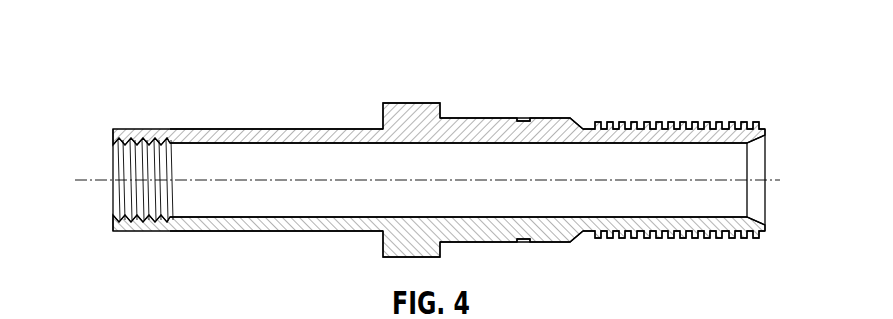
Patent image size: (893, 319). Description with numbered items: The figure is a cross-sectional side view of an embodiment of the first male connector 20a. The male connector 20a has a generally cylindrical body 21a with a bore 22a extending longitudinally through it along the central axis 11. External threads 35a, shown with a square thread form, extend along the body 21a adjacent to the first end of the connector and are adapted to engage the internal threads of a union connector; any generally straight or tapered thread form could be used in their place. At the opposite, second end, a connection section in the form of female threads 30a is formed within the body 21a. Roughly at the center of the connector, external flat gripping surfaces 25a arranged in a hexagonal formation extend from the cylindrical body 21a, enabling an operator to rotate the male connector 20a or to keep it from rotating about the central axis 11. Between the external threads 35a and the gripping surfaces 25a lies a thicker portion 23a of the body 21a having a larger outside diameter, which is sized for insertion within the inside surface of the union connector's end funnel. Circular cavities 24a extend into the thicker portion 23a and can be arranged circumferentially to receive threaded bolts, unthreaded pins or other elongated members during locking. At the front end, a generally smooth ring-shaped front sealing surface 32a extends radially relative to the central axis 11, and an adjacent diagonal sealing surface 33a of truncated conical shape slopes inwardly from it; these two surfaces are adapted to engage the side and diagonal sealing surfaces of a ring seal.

The first male connector 20a is at (430, 148).
The cylindrical body 21a is at (272, 128).
The bore 22a is at (111, 199).
The thicker portion 23a is at (481, 118).
The circular cavities 24a is at (524, 121).
The external flat gripping surfaces 25a is at (414, 103).
The female threads 30a is at (114, 144).
The front sealing surface 32a is at (765, 229).
The diagonal sealing surface 33a is at (757, 222).
The external threads 35a is at (671, 122).
The central axis 11 is at (97, 180).